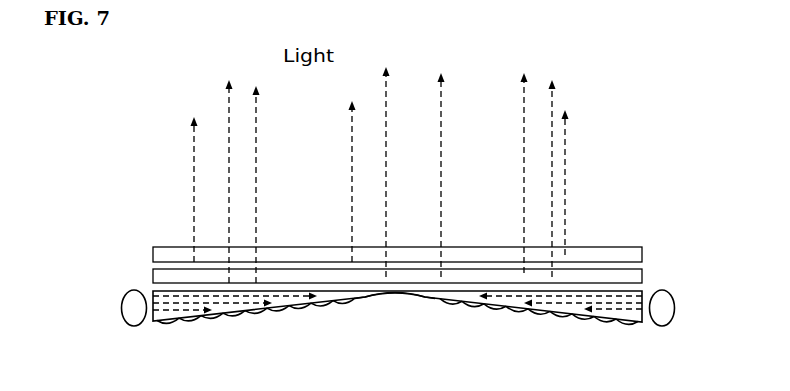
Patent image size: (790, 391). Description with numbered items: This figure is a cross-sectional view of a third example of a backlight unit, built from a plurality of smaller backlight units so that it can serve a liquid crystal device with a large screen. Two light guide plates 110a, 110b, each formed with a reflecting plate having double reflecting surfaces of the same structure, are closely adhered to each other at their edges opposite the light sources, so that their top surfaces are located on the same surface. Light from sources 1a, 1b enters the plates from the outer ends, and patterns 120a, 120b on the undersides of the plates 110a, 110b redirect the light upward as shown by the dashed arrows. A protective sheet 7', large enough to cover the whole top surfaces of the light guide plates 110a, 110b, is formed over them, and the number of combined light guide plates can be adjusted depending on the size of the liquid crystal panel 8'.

The liquid crystal panel 8' is at (362, 251).
The protective sheet 7' is at (362, 274).
The first light source 1a is at (144, 308).
The second light source 1b is at (652, 308).
The light guide plate 110a is at (362, 296).
The light guide plate 110b is at (437, 296).
The first light extraction pattern 120a is at (241, 316).
The second light extraction pattern 120b is at (563, 316).